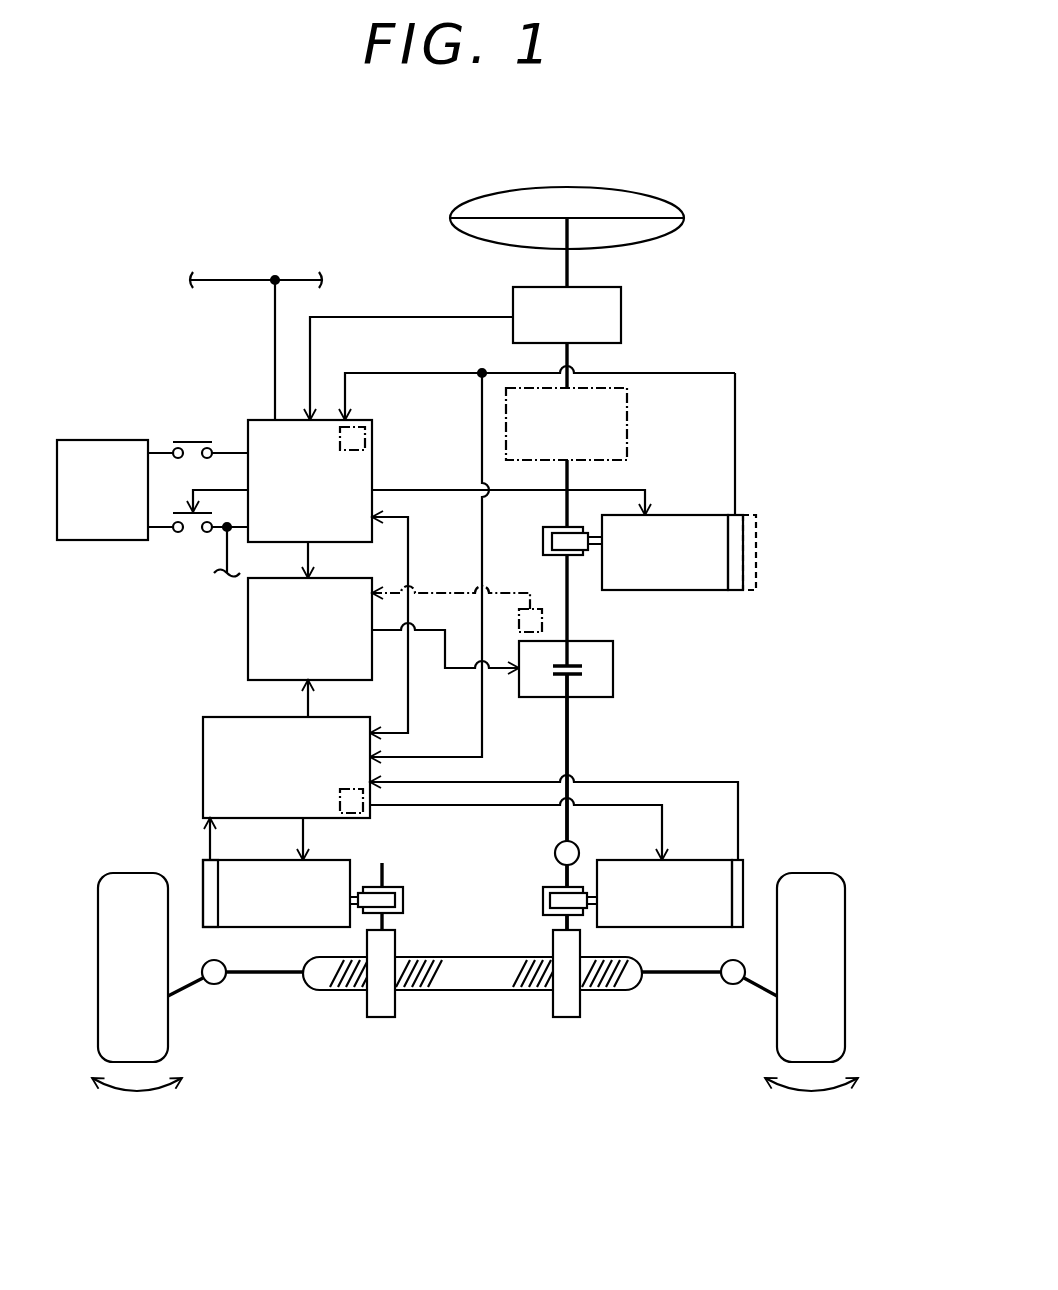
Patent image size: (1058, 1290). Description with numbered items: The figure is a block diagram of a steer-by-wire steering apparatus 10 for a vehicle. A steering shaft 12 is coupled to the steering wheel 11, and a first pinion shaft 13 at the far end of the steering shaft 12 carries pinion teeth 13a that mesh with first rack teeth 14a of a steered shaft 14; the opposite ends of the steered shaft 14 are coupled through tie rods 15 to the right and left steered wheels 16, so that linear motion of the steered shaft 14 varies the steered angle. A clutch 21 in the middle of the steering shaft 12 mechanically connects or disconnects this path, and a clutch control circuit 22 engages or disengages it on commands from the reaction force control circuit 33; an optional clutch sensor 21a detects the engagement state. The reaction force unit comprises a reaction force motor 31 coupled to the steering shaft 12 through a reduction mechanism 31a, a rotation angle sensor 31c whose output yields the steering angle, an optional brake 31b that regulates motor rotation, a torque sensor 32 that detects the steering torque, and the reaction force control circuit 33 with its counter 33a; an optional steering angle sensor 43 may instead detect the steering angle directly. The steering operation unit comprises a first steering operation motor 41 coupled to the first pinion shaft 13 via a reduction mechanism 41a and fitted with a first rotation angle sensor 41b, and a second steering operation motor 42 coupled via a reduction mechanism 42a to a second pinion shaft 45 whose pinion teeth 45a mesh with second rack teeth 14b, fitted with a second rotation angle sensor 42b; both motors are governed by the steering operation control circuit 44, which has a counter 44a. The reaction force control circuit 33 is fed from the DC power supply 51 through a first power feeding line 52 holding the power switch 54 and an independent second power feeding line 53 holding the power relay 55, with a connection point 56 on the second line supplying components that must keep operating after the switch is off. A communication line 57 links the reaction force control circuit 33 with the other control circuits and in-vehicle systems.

The steering apparatus 10 is at (703, 187).
The steering wheel 11 is at (637, 192).
The steering shaft 12 is at (569, 270).
The first pinion shaft 13 is at (547, 815).
The pinion teeth 13a is at (567, 1018).
The steered shaft 14 is at (472, 1001).
The first rack teeth 14a is at (528, 990).
The second rack teeth 14b is at (413, 990).
The tie rod 15 is at (262, 976).
The steered wheel 16 is at (169, 1040).
The clutch 21 is at (522, 625).
The clutch sensor 21a is at (544, 620).
The clutch control circuit 22 is at (247, 632).
The reaction force motor 31 is at (664, 508).
The reduction mechanism 31a is at (539, 536).
The brake 31b is at (757, 504).
The rotation angle sensor 31c is at (740, 592).
The torque sensor 32 is at (622, 318).
The reaction force control circuit 33 is at (437, 552).
The counter 33a is at (366, 436).
The first steering operation motor 41 is at (687, 885).
The reduction mechanism 41a is at (538, 911).
The first rotation angle sensor 41b is at (745, 917).
The second steering operation motor 42 is at (277, 896).
The reduction mechanism 42a is at (407, 911).
The second rotation angle sensor 42b is at (203, 912).
The steering angle sensor 43 is at (628, 425).
The steering operation control circuit 44 is at (458, 788).
The counter 44a is at (362, 815).
The second pinion shaft 45 is at (402, 905).
The pinion teeth 45a is at (381, 1018).
The DC power supply 51 is at (95, 439).
The first power feeding line 52 is at (167, 452).
The second power feeding line 53 is at (166, 528).
The power switch 54 is at (194, 441).
The power relay 55 is at (176, 511).
The connection point 56 is at (227, 525).
The communication line 57 is at (236, 278).